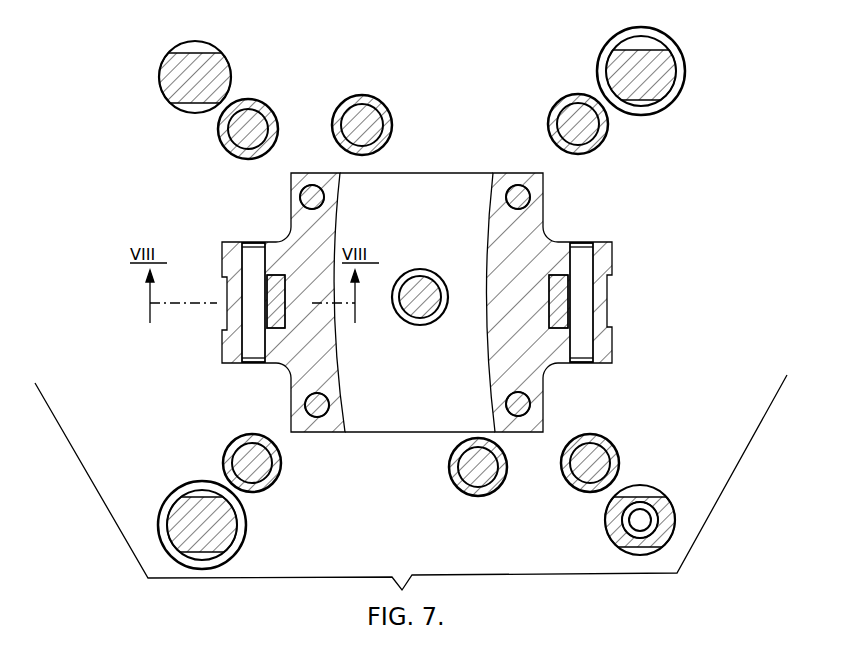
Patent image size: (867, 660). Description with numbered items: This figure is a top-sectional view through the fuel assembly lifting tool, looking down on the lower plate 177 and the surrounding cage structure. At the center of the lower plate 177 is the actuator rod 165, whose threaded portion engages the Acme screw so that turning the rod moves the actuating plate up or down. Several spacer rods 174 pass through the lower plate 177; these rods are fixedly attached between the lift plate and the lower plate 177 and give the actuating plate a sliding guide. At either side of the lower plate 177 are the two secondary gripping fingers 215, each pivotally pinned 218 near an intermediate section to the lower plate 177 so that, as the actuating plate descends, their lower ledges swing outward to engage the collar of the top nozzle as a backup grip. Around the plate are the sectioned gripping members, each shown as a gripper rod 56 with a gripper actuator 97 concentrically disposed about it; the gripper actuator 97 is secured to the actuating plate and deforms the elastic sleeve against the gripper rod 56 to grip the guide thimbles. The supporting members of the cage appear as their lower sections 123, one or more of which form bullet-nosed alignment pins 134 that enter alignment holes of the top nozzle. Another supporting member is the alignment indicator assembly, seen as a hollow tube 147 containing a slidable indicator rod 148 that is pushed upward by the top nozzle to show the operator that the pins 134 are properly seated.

The gripper rod 56 is at (250, 100).
The gripper actuator 97 is at (381, 103).
The lower section of supporting member 123 is at (213, 46).
The pin 134 is at (677, 52).
The hollow tube 147 is at (656, 490).
The indicator rod 148 is at (622, 519).
The actuator rod 165 is at (423, 305).
The spacer rods 174 is at (300, 194).
The lower plate 177 is at (452, 172).
The gripping fingers 215 is at (240, 290).
The pivot pin 218 is at (253, 350).